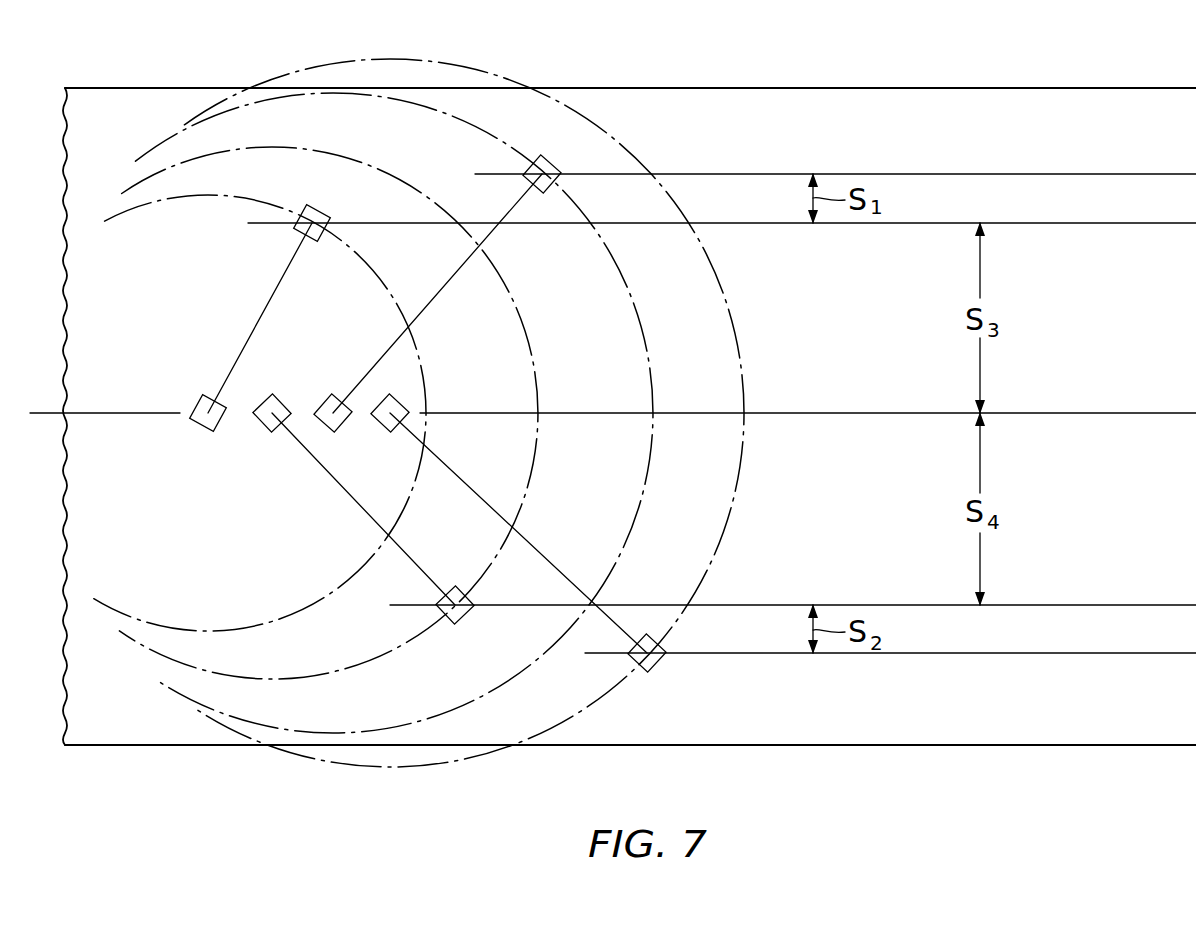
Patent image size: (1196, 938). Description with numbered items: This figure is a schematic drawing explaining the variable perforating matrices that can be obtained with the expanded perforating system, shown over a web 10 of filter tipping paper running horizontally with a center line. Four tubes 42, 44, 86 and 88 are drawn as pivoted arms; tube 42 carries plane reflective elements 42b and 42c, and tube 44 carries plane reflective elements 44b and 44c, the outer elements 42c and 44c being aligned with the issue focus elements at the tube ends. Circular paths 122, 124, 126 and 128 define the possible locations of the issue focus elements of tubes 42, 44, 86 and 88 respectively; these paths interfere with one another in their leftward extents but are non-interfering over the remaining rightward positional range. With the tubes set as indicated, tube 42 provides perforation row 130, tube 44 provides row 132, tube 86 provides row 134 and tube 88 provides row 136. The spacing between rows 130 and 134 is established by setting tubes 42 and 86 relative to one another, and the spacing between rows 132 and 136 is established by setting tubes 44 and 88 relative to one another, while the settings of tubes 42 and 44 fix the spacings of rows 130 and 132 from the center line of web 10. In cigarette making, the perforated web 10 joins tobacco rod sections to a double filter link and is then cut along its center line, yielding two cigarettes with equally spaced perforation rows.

The web 10 is at (712, 97).
The tube 42 is at (256, 309).
The plane reflective element 42b is at (200, 427).
The plane reflective element 42c is at (312, 208).
The tube 44 is at (350, 510).
The plane reflective element 44b is at (284, 400).
The plane reflective element 44c is at (458, 618).
The tube 86 is at (452, 288).
The tube 88 is at (548, 548).
The circular path 122 is at (428, 383).
The circular path 124 is at (540, 378).
The circular path 126 is at (620, 273).
The circular path 128 is at (728, 303).
The perforation row 130 is at (1073, 224).
The perforation row 132 is at (1070, 605).
The perforation row 134 is at (1073, 173).
The perforation row 136 is at (1070, 654).